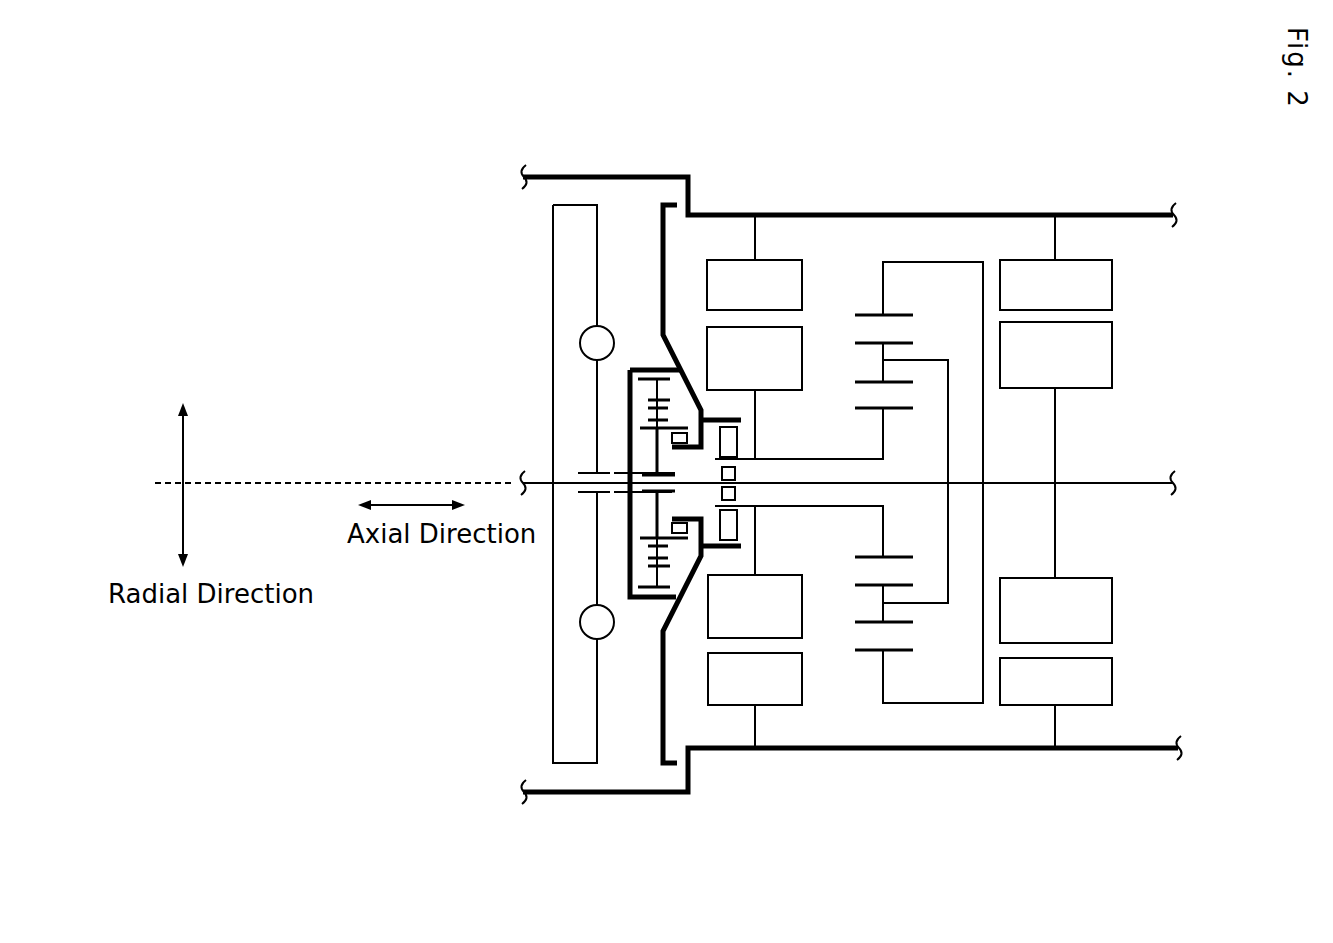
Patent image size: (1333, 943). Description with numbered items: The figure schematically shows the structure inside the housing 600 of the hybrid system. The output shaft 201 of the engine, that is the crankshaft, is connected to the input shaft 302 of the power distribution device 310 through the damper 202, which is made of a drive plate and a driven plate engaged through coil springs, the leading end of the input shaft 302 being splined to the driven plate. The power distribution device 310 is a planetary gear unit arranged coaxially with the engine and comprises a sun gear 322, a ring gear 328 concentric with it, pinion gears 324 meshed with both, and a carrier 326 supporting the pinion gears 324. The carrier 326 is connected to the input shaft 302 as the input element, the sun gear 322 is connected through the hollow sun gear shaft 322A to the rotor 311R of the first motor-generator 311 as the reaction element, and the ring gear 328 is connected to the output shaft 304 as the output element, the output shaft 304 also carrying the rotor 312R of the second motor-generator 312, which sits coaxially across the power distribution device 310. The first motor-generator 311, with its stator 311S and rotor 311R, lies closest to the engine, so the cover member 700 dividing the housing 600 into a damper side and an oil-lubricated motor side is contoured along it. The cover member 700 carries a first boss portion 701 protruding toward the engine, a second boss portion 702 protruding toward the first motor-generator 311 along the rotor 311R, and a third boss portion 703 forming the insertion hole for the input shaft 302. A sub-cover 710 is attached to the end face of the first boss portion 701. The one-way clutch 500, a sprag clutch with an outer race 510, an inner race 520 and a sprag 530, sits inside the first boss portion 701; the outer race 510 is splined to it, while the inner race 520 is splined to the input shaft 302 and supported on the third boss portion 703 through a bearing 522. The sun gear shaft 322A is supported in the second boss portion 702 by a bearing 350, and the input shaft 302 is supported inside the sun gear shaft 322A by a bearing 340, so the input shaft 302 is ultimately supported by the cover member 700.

The housing 600 is at (604, 176).
The damper 202 is at (553, 242).
The output shaft 201 is at (523, 495).
The cover member 700 is at (663, 262).
The first boss portion 701 is at (653, 372).
The second boss portion 702 is at (738, 420).
The third boss portion 703 is at (690, 447).
The sub-cover 710 is at (640, 381).
The one-way clutch 500 is at (549, 454).
The outer race 510 is at (640, 400).
The sprag 530 is at (648, 410).
The inner race 520 is at (640, 428).
The bearing 522 is at (672, 444).
The bearing 350 is at (737, 438).
The bearing 340 is at (738, 474).
The first motor-generator 311 is at (790, 495).
The stator 311S is at (780, 705).
The rotor 311R is at (803, 627).
The power distribution device 310 is at (869, 428).
The ring gear 328 is at (897, 314).
The pinion gears 324 is at (883, 354).
The carrier 326 is at (920, 360).
The sun gear 322 is at (867, 405).
The sun gear shaft 322A is at (863, 458).
The second motor-generator 312 is at (1120, 276).
The rotor 312R is at (1113, 355).
The input shaft 302 is at (935, 482).
The output shaft 304 is at (1112, 482).